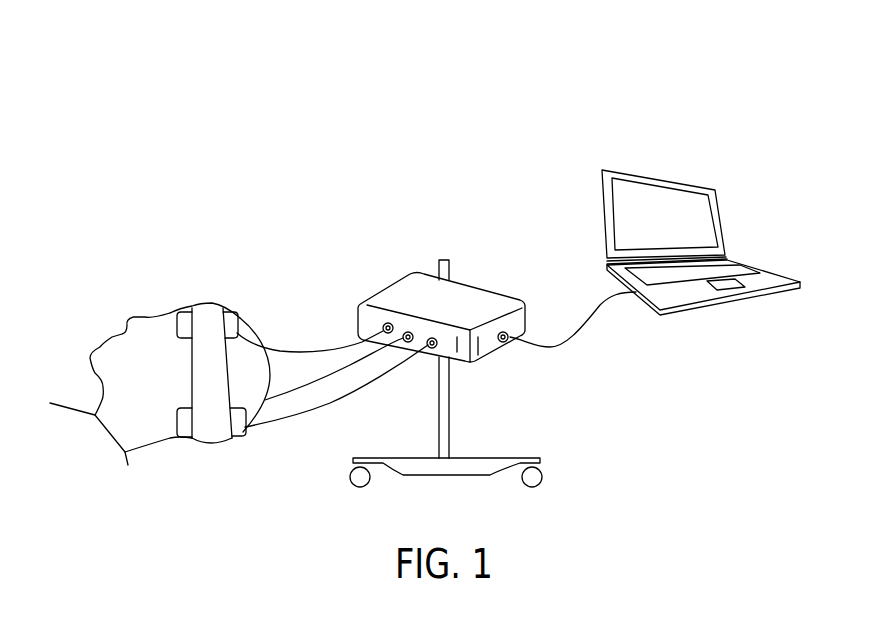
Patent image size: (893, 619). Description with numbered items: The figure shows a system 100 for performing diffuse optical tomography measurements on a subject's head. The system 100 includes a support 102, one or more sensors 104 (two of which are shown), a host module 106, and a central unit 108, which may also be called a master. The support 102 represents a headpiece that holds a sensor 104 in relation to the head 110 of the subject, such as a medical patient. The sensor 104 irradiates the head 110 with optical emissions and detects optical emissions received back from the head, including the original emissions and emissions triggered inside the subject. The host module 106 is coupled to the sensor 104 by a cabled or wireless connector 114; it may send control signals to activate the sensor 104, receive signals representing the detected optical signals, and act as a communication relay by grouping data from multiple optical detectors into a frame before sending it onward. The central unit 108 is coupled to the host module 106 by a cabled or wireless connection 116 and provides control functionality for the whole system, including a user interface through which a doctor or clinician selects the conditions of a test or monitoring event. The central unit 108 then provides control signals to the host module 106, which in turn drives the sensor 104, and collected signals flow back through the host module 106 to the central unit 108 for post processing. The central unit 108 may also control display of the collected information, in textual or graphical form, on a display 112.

The system 100 is at (478, 86).
The support 102 is at (205, 310).
The sensor 104 is at (228, 322).
The host module 106 is at (477, 292).
The central unit 108 is at (703, 307).
The head 110 is at (240, 334).
The display 112 is at (668, 198).
The cabled or wireless connector 114 is at (313, 348).
The cabled or wireless connection 116 is at (555, 337).